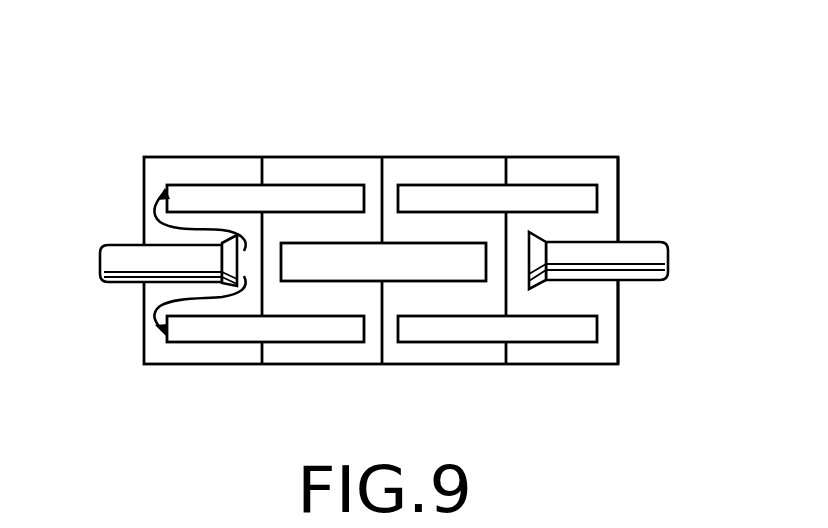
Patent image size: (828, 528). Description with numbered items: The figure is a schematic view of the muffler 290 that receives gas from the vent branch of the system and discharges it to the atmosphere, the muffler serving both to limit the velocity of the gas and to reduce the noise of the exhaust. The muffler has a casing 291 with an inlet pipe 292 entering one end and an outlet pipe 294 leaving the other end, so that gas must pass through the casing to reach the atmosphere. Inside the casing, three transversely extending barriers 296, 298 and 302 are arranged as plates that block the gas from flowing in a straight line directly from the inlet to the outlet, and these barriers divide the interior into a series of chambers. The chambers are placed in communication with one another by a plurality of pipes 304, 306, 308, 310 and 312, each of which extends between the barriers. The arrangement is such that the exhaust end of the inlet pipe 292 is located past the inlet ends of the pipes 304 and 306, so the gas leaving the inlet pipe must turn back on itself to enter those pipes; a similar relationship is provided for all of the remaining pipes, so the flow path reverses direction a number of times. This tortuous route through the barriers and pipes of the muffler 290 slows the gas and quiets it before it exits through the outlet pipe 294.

The muffler 290 is at (322, 152).
The casing 291 is at (598, 168).
The inlet pipe 292 is at (137, 256).
The outlet pipe 294 is at (628, 255).
The barrier 296 is at (257, 350).
The barrier 298 is at (378, 350).
The barrier 302 is at (504, 348).
The pipe 304 is at (223, 197).
The pipe 306 is at (203, 327).
The pipe 308 is at (360, 258).
The pipe 310 is at (512, 195).
The pipe 312 is at (533, 323).